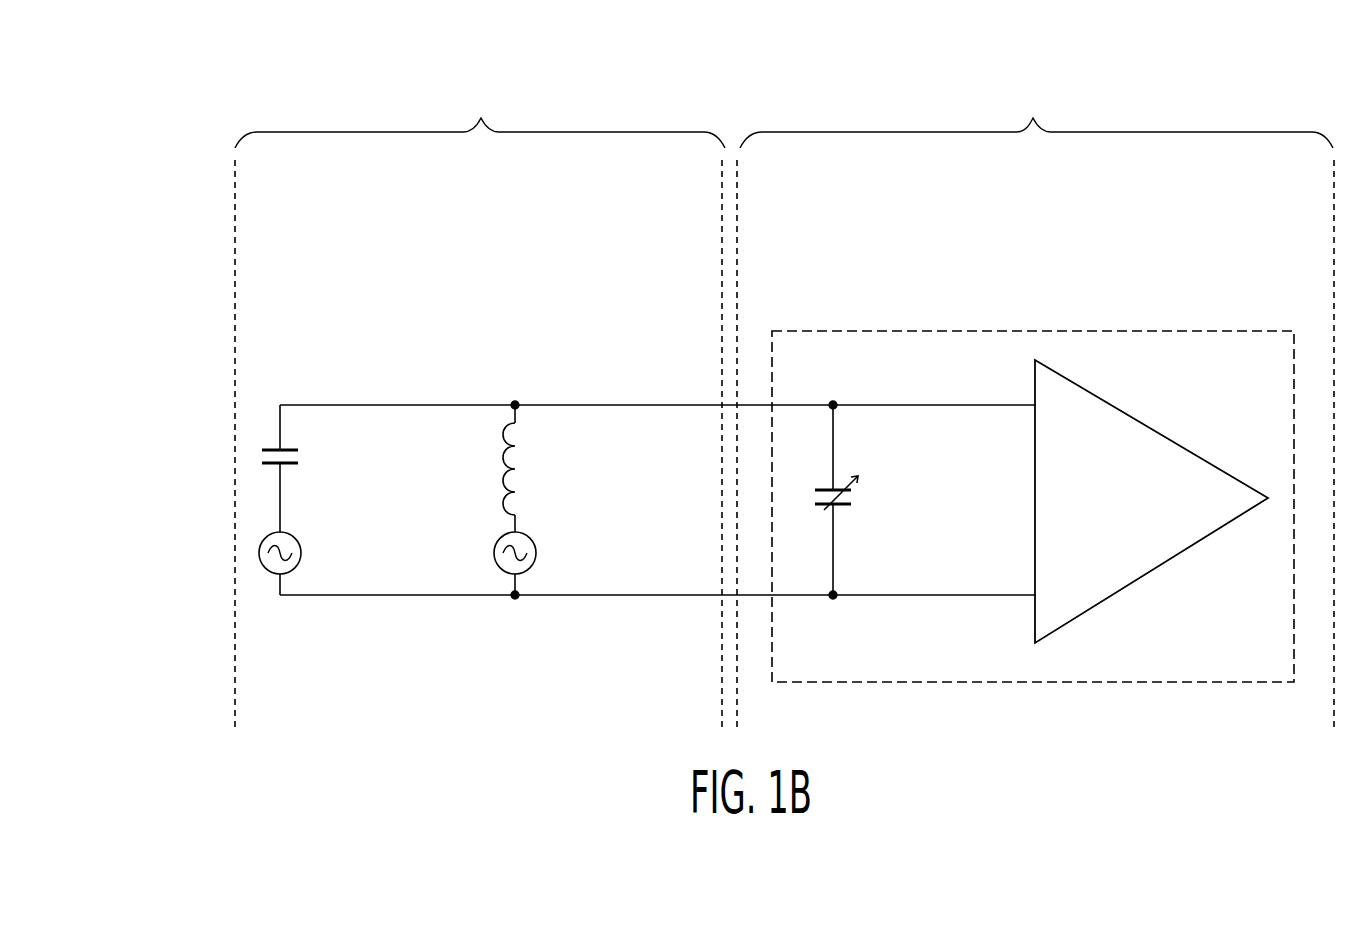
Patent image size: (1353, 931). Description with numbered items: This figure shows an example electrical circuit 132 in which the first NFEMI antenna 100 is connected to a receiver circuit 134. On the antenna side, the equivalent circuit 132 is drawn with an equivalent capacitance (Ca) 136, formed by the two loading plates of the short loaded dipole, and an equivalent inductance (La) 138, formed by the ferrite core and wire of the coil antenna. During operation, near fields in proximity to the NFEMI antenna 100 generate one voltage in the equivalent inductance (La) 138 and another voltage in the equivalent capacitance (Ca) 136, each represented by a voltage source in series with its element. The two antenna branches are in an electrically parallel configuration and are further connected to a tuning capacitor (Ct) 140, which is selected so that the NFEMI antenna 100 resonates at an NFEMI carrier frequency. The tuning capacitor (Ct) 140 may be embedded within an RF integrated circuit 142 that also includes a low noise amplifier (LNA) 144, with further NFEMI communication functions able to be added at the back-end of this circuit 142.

The electrical circuit 132 is at (212, 92).
The NFEMI antenna 100 is at (477, 78).
The receiver circuit 134 is at (1037, 81).
The equivalent capacitance (Ca) 136 is at (335, 457).
The equivalent inductance (La) 138 is at (550, 472).
The tuning capacitor (Ct) 140 is at (887, 501).
The RF integrated circuit (RF IC) 142 is at (1034, 330).
The low noise amplifier (LNA) 144 is at (1176, 441).